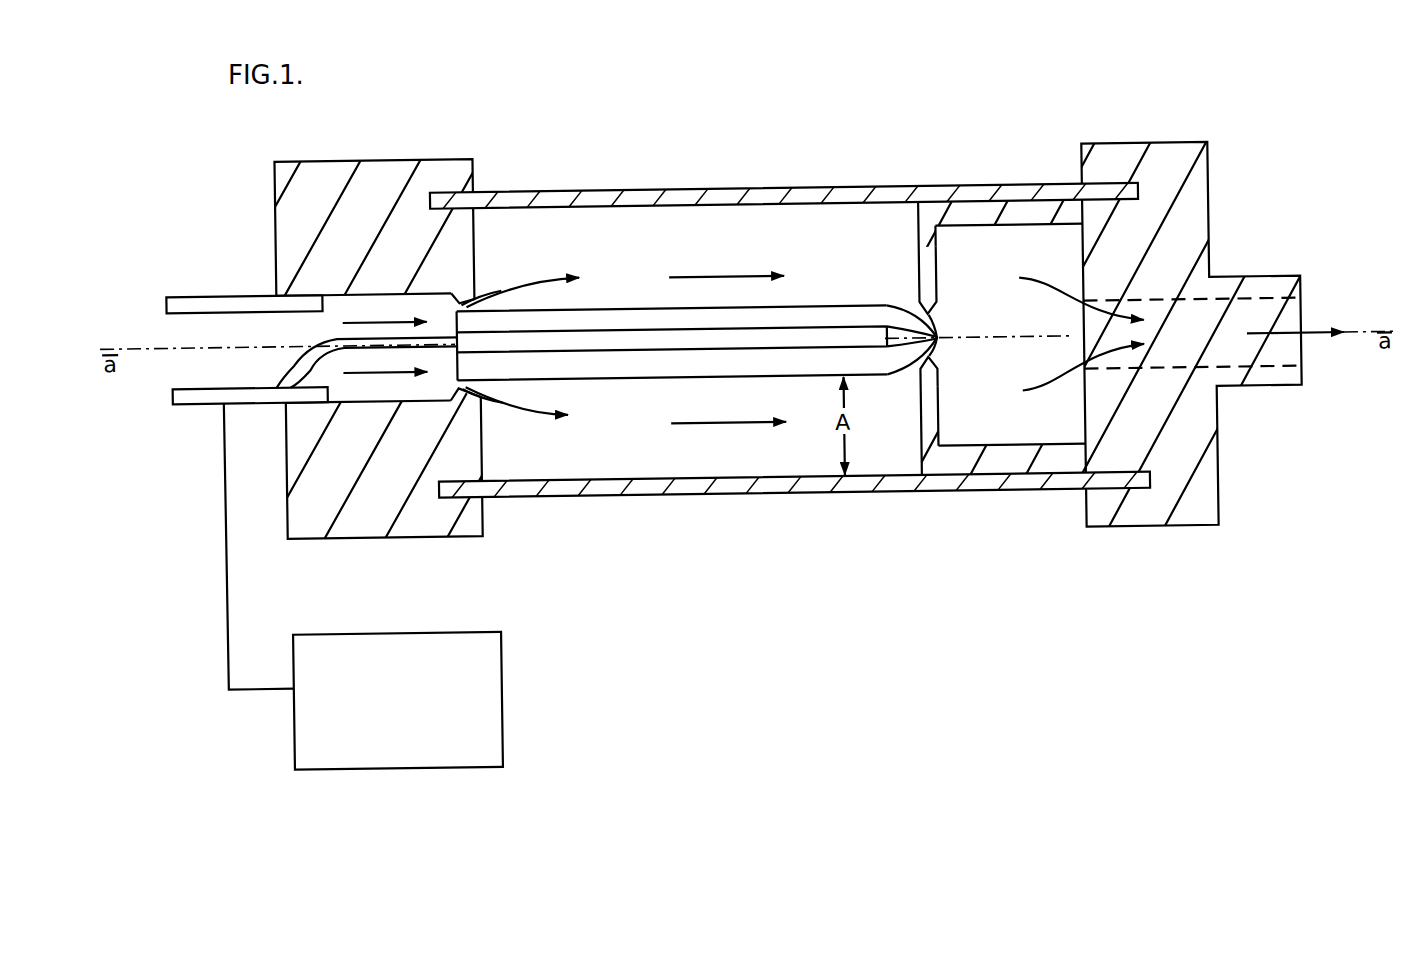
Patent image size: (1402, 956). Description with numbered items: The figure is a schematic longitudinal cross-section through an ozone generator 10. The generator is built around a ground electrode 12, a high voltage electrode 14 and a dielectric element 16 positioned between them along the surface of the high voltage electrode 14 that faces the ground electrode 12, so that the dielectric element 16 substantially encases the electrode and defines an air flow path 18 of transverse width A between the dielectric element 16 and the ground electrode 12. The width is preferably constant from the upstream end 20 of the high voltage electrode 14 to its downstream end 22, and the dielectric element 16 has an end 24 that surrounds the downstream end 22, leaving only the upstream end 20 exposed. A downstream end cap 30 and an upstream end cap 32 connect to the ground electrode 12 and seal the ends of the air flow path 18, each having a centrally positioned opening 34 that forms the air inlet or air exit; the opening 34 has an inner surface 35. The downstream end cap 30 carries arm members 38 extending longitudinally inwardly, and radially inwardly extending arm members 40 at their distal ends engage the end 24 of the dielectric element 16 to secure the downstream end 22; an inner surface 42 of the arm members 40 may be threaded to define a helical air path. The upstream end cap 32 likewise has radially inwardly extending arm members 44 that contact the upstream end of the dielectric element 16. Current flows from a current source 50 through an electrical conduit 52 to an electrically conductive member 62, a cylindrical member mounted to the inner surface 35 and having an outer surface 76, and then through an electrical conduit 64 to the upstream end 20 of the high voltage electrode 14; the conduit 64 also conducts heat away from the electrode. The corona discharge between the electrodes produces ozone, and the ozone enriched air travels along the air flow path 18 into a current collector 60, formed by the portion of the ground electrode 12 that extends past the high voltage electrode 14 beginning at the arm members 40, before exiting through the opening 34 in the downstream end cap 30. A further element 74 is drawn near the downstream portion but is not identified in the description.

The ozone generator 10 is at (747, 160).
The ground electrode 12 is at (663, 496).
The high voltage electrode 14 is at (826, 327).
The dielectric element 16 is at (630, 309).
The air flow path 18 is at (737, 496).
The upstream end 20 is at (473, 381).
The downstream end 22 is at (880, 363).
The end of dielectric element 24 is at (930, 320).
The downstream end cap 30 is at (1169, 171).
The upstream end cap 32 is at (430, 533).
The opening 34 is at (387, 309).
The inner surface of opening 35 is at (345, 303).
The arm members 38 is at (1020, 464).
The radially inwardly extending arm members 40 is at (930, 285).
The inner surface of arm members 42 is at (948, 360).
The radially inwardly extending arm members 44 is at (473, 294).
The current source 50 is at (500, 690).
The electrical conduit 52 is at (227, 577).
The current collector 60 is at (989, 189).
The electrically conductive member 62 is at (218, 290).
The electrical conduit 64 is at (367, 344).
The partition plate 74 is at (942, 500).
The outer surface 76 is at (193, 290).